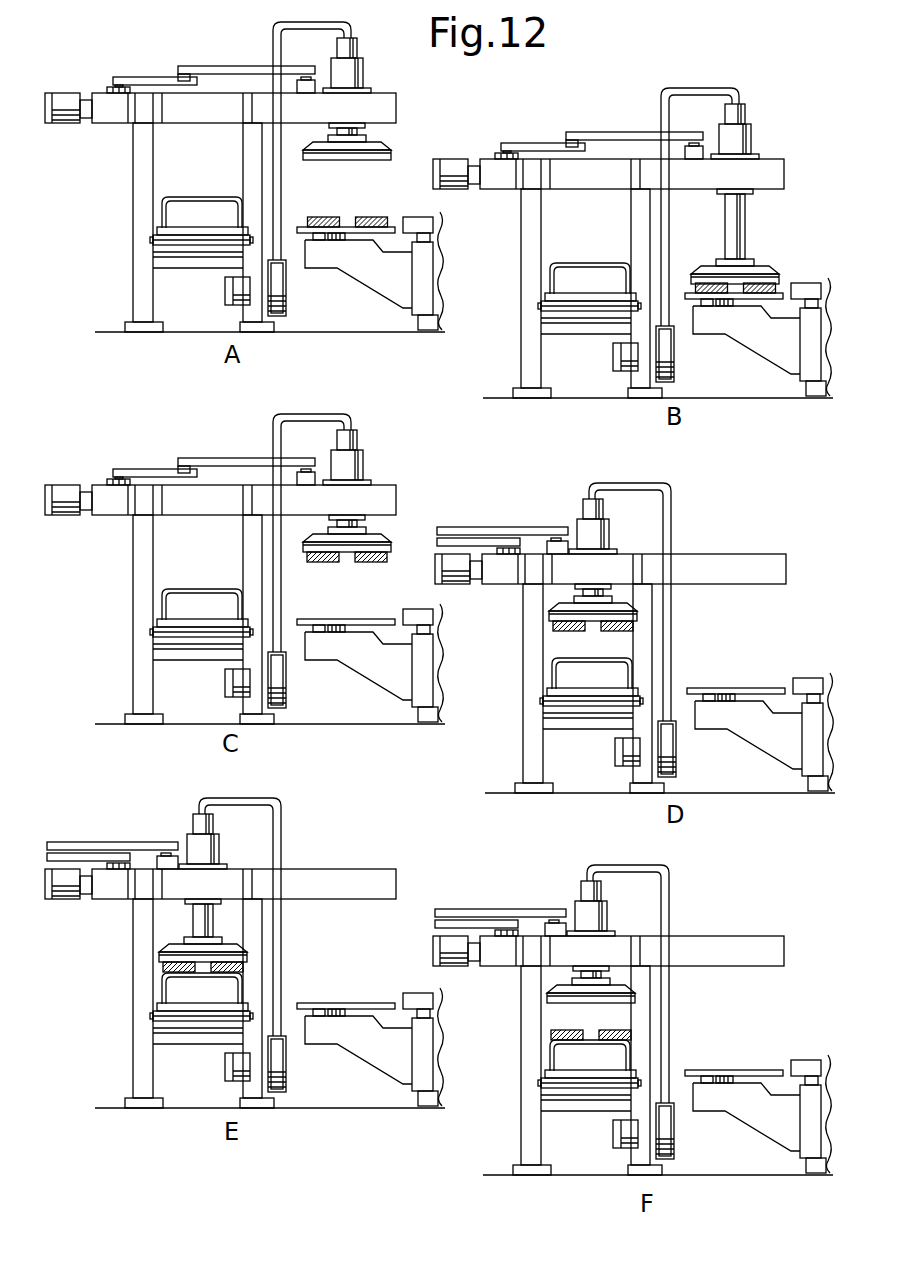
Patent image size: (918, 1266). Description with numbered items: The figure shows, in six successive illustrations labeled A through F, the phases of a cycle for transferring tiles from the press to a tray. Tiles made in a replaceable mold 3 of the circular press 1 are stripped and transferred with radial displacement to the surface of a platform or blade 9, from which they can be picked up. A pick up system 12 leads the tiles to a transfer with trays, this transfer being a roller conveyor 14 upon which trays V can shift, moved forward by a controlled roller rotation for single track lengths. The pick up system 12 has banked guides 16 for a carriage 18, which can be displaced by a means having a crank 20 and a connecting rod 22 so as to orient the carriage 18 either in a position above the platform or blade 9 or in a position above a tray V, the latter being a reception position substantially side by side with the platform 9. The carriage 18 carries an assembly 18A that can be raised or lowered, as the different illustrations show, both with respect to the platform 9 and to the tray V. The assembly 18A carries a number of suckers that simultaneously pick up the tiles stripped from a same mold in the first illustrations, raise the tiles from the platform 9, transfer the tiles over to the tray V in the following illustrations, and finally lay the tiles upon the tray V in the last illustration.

The circular press 1 is at (411, 216).
The mold 3 is at (434, 230).
The platform or blade 9 is at (350, 243).
The pick up system 12 is at (131, 147).
The roller conveyor 14 is at (175, 240).
The banked guides 16 is at (385, 98).
The carriage 18 is at (331, 62).
The assembly 18A is at (345, 148).
The crank 20 is at (120, 77).
The connecting rod 22 is at (193, 70).
The tray V is at (197, 197).